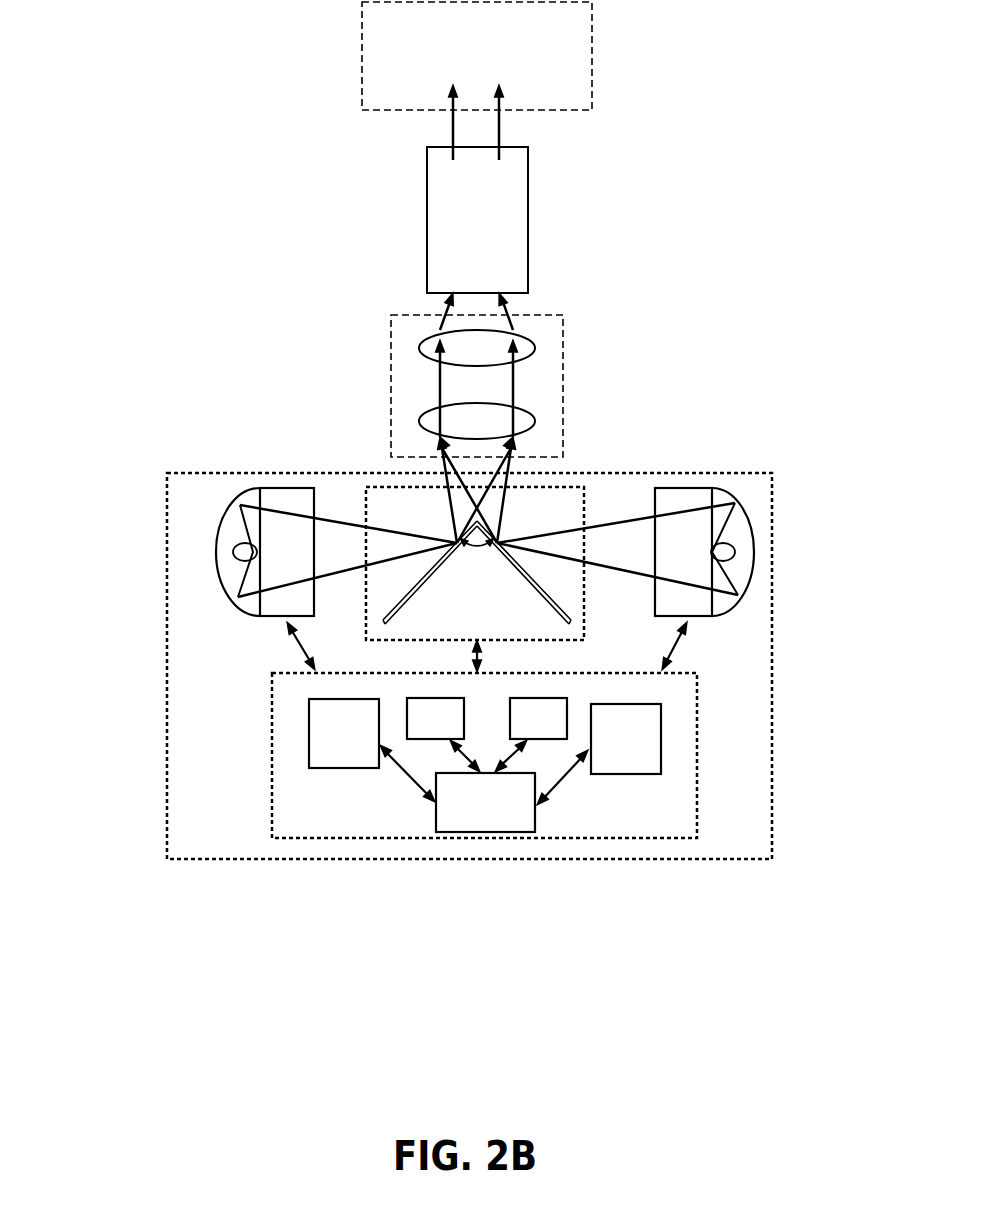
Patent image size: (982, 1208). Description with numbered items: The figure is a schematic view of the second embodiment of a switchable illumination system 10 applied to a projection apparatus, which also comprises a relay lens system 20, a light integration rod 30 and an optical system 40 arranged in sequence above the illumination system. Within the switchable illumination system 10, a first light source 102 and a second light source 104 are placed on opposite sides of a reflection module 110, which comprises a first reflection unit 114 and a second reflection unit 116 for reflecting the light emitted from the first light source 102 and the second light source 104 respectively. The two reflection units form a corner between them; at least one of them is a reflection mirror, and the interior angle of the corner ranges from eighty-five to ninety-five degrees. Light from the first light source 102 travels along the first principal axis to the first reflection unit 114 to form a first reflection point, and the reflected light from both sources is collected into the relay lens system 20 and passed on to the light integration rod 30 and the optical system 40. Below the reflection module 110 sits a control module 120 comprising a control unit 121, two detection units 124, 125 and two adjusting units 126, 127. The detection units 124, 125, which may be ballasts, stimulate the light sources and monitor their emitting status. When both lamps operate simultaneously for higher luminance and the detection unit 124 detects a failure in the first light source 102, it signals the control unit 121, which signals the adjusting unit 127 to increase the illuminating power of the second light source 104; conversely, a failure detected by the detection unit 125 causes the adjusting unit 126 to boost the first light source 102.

The switchable illumination system 10 is at (155, 489).
The relay lens system 20 is at (378, 361).
The light integration rod 30 is at (414, 181).
The optical system 40 is at (350, 35).
The first light source 102 is at (217, 573).
The second light source 104 is at (752, 572).
The reflection module 110 is at (356, 482).
The first reflection unit 114 is at (383, 622).
The second reflection unit 116 is at (571, 622).
The control module 120 is at (257, 831).
The control unit 121 is at (477, 823).
The detection unit 124 is at (315, 757).
The detection unit 125 is at (642, 762).
The adjusting unit 126 is at (417, 720).
The adjusting unit 127 is at (570, 717).